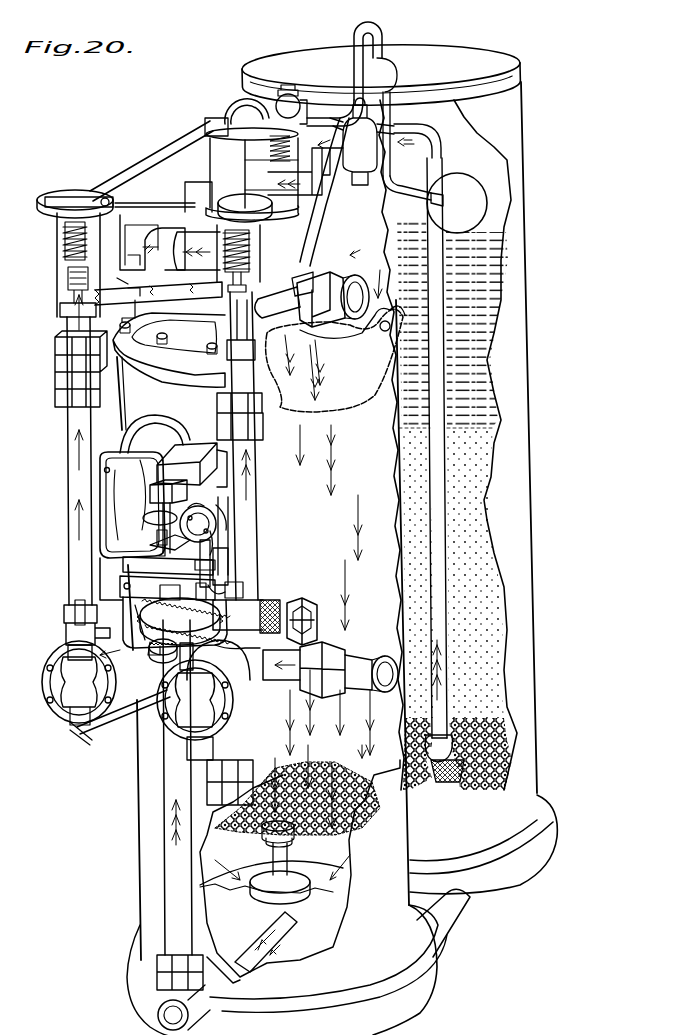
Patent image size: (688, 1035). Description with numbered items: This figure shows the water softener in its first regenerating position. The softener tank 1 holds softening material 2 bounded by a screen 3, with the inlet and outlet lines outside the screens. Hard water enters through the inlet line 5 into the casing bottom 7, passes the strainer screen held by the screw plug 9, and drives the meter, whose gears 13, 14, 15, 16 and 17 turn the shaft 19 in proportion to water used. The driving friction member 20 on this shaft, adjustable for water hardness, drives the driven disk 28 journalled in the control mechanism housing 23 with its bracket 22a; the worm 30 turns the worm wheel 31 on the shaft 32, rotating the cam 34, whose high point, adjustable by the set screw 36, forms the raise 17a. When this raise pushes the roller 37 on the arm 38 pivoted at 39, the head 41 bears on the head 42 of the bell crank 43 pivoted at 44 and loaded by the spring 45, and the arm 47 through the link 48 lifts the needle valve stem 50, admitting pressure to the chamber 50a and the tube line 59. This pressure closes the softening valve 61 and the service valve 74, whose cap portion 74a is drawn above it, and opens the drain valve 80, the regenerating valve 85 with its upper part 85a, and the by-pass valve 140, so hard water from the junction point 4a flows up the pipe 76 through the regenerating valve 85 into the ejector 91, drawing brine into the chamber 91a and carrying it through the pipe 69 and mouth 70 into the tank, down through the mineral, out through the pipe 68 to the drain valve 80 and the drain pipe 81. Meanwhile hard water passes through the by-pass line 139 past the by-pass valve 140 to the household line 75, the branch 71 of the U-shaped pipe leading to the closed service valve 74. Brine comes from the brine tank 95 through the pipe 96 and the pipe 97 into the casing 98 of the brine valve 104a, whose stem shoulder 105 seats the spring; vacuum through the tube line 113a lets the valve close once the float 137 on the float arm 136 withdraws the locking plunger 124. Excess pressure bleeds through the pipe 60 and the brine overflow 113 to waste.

The tank 1 is at (138, 808).
The softening material 2 is at (362, 792).
The screen 3 is at (360, 845).
The junction point 4a is at (66, 626).
The hard water inlet line 5 is at (390, 655).
The casing bottom 7 is at (306, 604).
The screw plug 9 is at (272, 604).
The gear 13 is at (150, 655).
The gear 14 is at (205, 645).
The gear 15 is at (222, 622).
The gear 16 is at (212, 611).
The gear 17 is at (157, 611).
The raise on the cam 17a is at (233, 507).
The shaft 19 is at (147, 582).
The driving friction member 20 is at (163, 520).
The bracket 22a is at (167, 490).
The control mechanism housing 23 is at (177, 450).
The driven disk 28 is at (130, 462).
The worm 30 is at (205, 480).
The worm wheel 31 is at (210, 493).
The shaft 32 is at (212, 523).
The cam ring 34 is at (208, 511).
The set screw 36 is at (152, 523).
The cam follower or roller 37 is at (218, 533).
The arm 38 is at (220, 540).
The pivot 39 is at (255, 545).
The head 41 is at (230, 555).
The head 42 is at (232, 568).
The bell crank 43 is at (215, 593).
The pivot 44 is at (165, 568).
The spring 45 is at (245, 580).
The arm 47 is at (160, 543).
The link 48 is at (160, 541).
The needle valve stem 50 is at (157, 590).
The chamber 50a is at (77, 618).
The pipe 59 is at (117, 717).
The pipe 60 is at (67, 646).
The softening valve 61 is at (48, 669).
The pipe 68 is at (165, 818).
The pipe 69 is at (258, 268).
The mouth of U-shaped pipe 70 is at (181, 226).
The branch of U-shaped pipe 71 is at (197, 292).
The household service valve 74 is at (284, 266).
The valve cap 74a is at (262, 248).
The household line 75 is at (358, 288).
The pipe 76 is at (80, 457).
The drain valve 80 is at (187, 700).
The drain pipe 81 is at (242, 756).
The regenerating valve 85 is at (67, 266).
The valve spring 85a is at (62, 230).
The injector 91 is at (150, 234).
The chamber 91a is at (143, 247).
The brine tank 95 is at (517, 737).
The pipe 96 is at (481, 260).
The pipe 97 is at (397, 127).
The casing 98 is at (300, 108).
The brine valve 104a is at (244, 104).
The shoulder 105 is at (213, 143).
The drain pipe 113 is at (326, 210).
The tube line 113a is at (300, 80).
The locking plunger 124 is at (274, 174).
The float arm 136 is at (421, 153).
The float 137 is at (460, 181).
The line 139 is at (245, 443).
The by-pass valve 140 is at (317, 370).